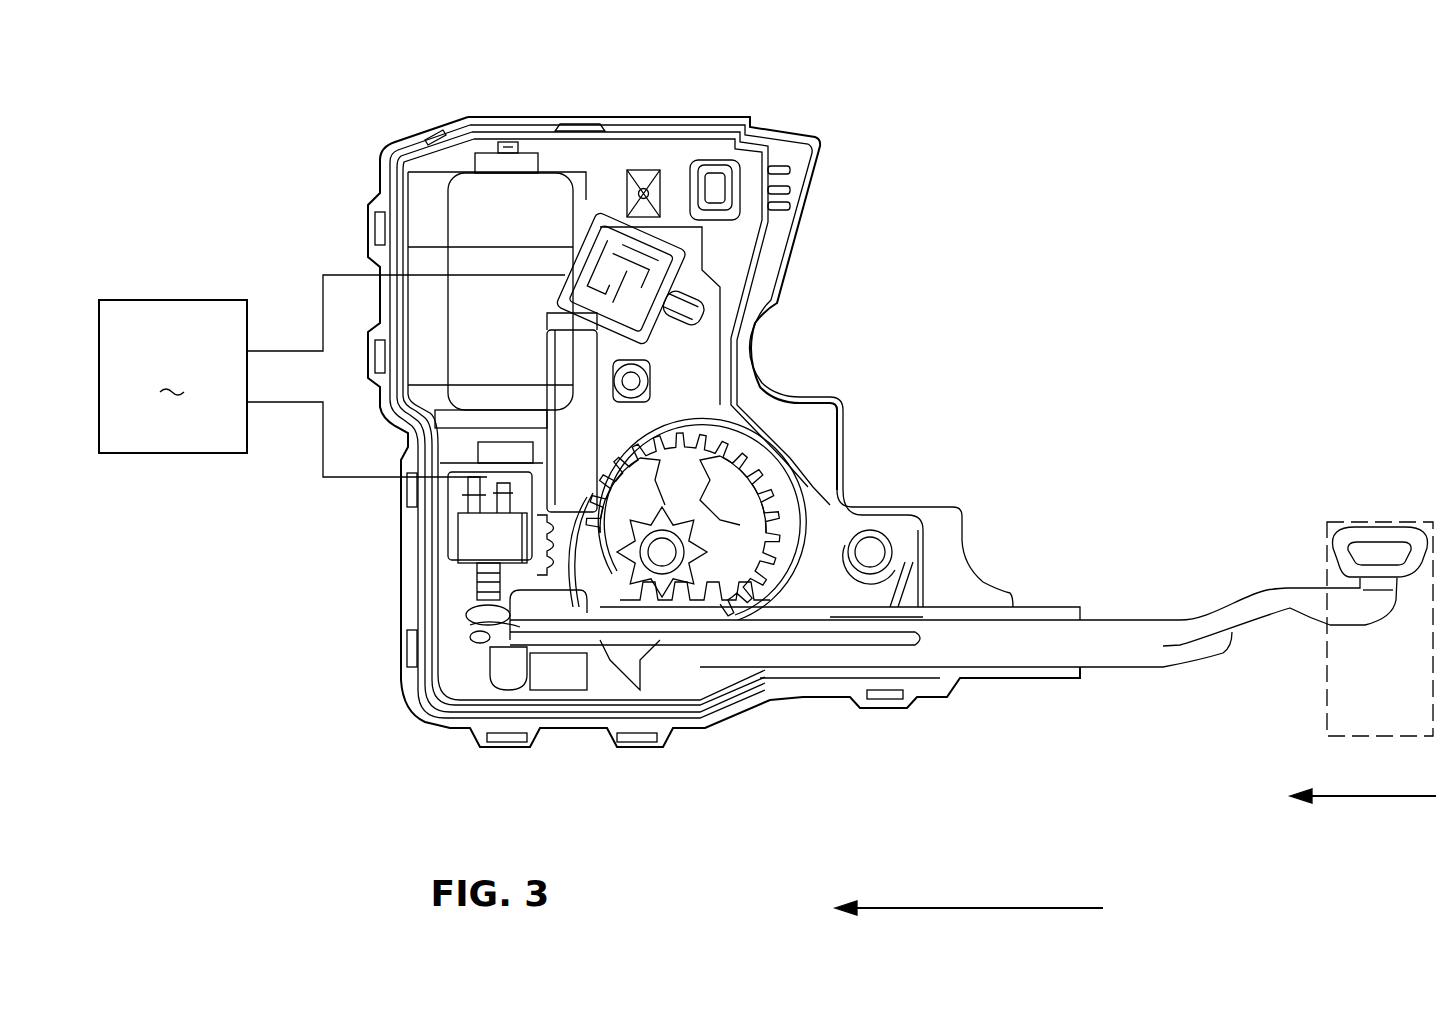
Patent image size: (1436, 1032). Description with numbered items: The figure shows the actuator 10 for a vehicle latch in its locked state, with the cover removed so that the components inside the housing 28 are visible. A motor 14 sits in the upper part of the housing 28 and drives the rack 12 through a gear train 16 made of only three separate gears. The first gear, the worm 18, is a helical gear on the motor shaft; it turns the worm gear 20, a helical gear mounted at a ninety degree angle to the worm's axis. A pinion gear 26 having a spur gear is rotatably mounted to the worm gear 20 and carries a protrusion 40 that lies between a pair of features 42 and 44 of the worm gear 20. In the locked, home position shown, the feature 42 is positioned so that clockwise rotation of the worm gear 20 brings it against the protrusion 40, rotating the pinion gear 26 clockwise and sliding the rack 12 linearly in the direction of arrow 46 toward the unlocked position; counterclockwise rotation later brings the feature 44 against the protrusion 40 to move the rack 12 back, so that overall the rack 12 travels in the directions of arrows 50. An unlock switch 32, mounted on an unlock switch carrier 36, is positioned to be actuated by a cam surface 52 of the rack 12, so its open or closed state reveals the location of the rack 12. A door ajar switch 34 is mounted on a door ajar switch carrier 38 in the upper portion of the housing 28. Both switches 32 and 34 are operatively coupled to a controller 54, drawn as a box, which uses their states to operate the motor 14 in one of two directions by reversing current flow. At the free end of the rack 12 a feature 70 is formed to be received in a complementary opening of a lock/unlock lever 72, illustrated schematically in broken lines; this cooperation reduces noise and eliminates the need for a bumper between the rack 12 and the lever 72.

The actuator 10 is at (1030, 252).
The rack 12 is at (1130, 638).
The motor 14 is at (465, 223).
The gear train 16 is at (837, 437).
The worm 18 is at (483, 617).
The worm gear 20 is at (743, 533).
The pinion gear 26 is at (643, 600).
The housing 28 is at (447, 130).
The unlock switch 32 is at (483, 543).
The door ajar switch 34 is at (652, 275).
The unlock switch carrier 36 is at (483, 477).
The door ajar switch carrier 38 is at (583, 207).
The protrusion 40 is at (761, 450).
The feature 42 is at (687, 403).
The feature 44 is at (693, 713).
The arrow 46 is at (963, 908).
The arrows 50 is at (1383, 797).
The cam surface 52 is at (527, 627).
The controller 54 is at (332, 376).
The feature 70 is at (1378, 535).
The lock/unlock lever 72 is at (1325, 674).